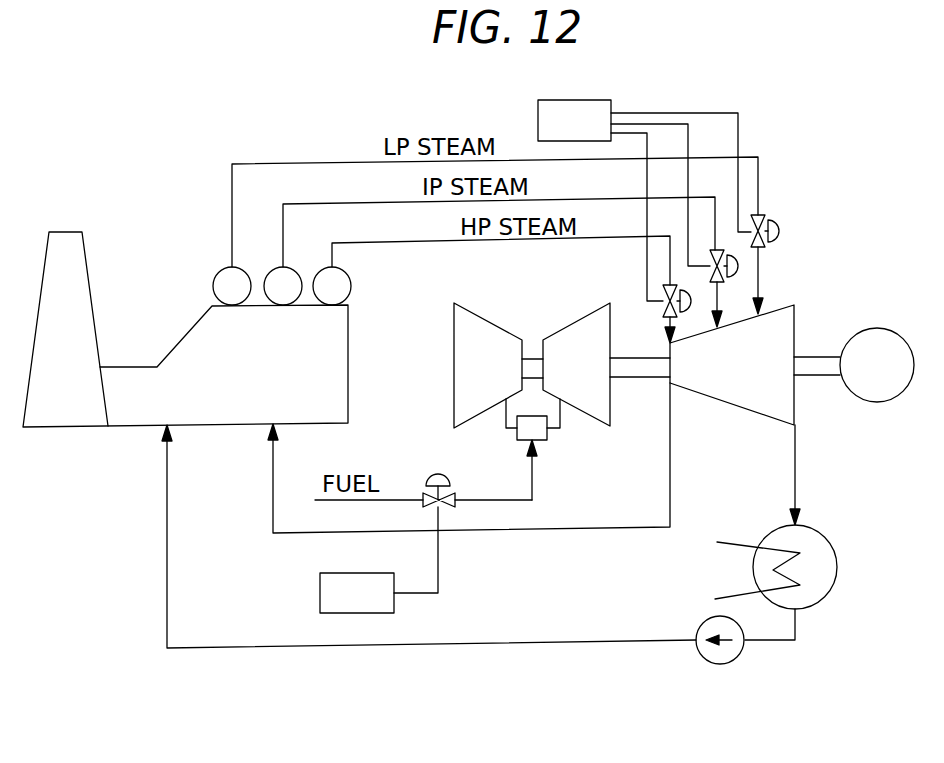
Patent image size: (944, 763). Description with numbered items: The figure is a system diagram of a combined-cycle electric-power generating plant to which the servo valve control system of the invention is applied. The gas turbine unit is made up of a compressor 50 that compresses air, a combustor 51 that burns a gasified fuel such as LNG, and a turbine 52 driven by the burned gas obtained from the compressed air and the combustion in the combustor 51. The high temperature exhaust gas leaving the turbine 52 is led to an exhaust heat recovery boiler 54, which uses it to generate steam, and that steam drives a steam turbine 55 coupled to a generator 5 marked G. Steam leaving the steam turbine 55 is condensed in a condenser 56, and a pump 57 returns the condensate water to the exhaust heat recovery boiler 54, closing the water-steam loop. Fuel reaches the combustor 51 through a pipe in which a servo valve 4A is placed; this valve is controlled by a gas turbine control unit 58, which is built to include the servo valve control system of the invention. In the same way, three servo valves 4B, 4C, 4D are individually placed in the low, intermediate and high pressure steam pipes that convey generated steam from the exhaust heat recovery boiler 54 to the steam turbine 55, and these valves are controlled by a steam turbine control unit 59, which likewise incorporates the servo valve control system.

The exhaust heat recovery boiler 54 is at (333, 363).
The steam turbine control unit 59 is at (580, 100).
The servo valve 4D is at (783, 226).
The servo valve 4C is at (741, 264).
The servo valve 4B is at (694, 300).
The steam turbine 55 is at (782, 340).
The generator 5 is at (888, 328).
The compressor 50 is at (478, 332).
The turbine 52 is at (573, 335).
The combustor 51 is at (548, 437).
The servo valve 4A is at (447, 480).
The gas turbine control unit 58 is at (358, 613).
The condenser 56 is at (818, 545).
The pump 57 is at (718, 665).